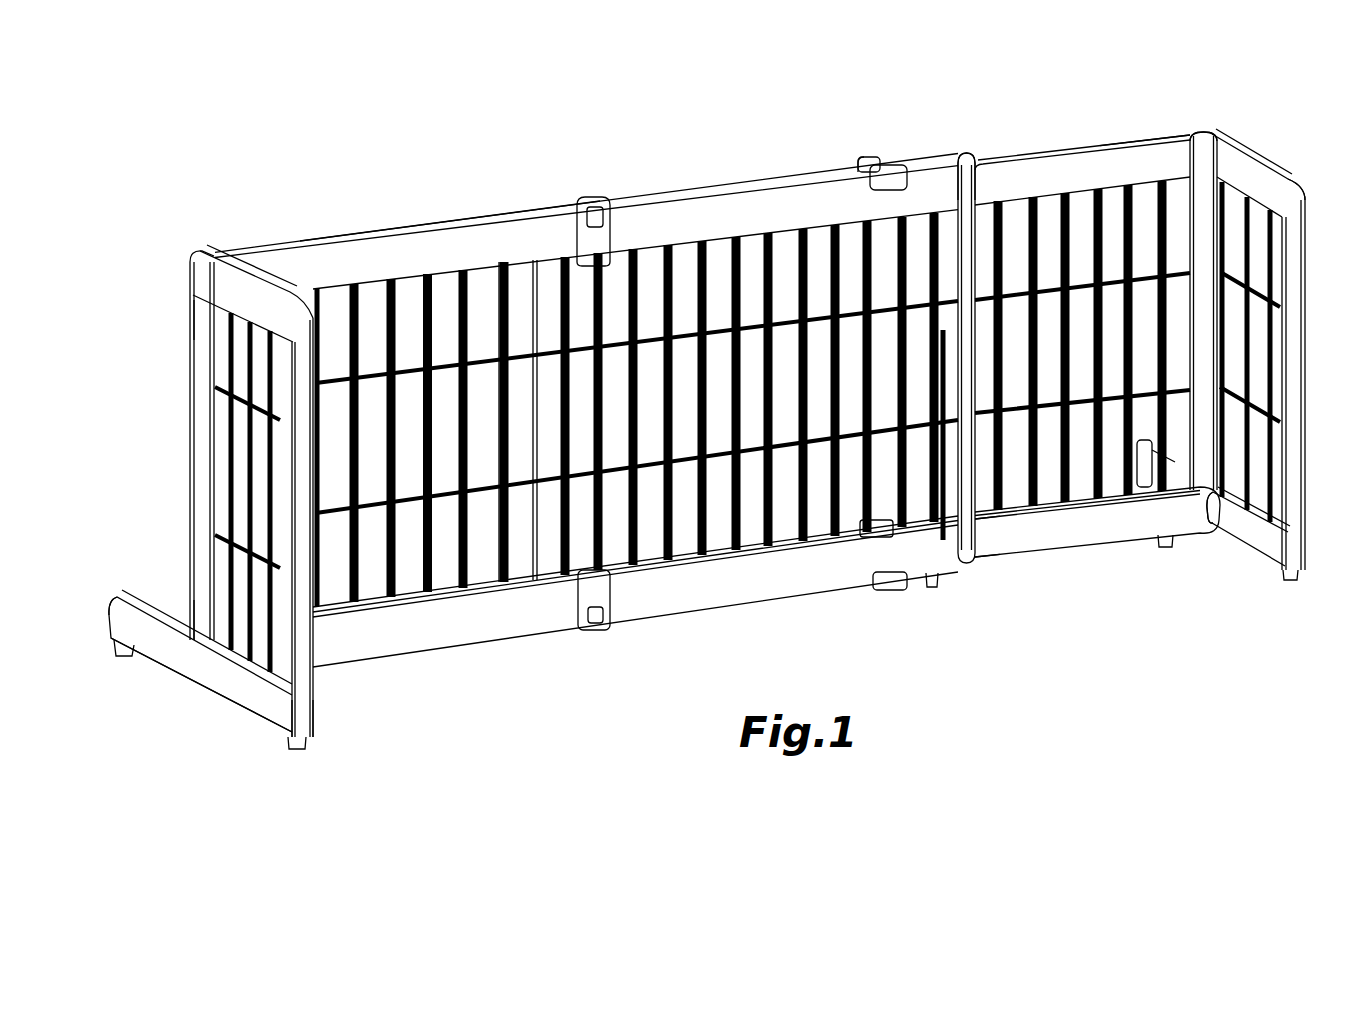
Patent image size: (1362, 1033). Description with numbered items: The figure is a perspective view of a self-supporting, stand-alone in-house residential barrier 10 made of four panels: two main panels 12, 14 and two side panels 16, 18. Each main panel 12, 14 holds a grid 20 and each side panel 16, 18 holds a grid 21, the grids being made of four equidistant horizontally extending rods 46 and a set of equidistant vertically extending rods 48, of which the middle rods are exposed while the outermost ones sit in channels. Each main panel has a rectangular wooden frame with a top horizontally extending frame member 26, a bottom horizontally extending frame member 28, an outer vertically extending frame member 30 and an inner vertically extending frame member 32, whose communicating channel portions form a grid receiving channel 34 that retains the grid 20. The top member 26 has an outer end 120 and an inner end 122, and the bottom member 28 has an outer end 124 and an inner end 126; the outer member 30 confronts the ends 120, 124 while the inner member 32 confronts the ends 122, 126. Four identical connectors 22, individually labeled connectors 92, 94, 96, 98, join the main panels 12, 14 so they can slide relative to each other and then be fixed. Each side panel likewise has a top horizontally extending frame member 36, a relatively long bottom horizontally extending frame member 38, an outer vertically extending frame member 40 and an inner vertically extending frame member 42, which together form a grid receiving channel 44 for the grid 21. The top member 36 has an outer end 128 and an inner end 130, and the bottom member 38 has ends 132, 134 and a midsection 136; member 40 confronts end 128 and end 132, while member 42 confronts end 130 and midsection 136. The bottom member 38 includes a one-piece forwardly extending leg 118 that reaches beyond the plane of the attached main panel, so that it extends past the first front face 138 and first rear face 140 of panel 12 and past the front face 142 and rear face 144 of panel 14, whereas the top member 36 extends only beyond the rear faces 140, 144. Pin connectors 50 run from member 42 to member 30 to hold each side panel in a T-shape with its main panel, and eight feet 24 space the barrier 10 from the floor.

The self-supporting barrier 10 is at (605, 157).
The main panel 12 is at (389, 220).
The main panel 14 is at (1020, 135).
The side panel 16 is at (233, 710).
The side panel 18 is at (1266, 575).
The grid 20 is at (1088, 470).
The grid 21 is at (1268, 440).
The connectors 22 is at (875, 158).
The feet 24 is at (295, 750).
The top horizontally extending frame member 26 is at (1095, 141).
The bottom horizontally extending frame member 28 is at (1125, 540).
The outer vertically extending frame member 30 is at (1200, 183).
The inner vertically extending frame member 32 is at (517, 335).
The grid receiving channel 34 is at (450, 593).
The top horizontally extending frame member 36 is at (265, 278).
The bottom horizontally extending frame member 38 is at (176, 680).
The outer vertically extending frame member 40 is at (313, 668).
The inner vertically extending frame member 42 is at (190, 440).
The grid receiving channel 44 is at (262, 680).
The horizontally extending rods 46 is at (378, 513).
The vertically extending rods 48 is at (1027, 480).
The pin connectors 50 is at (198, 320).
The connector 92 is at (893, 590).
The connector 94 is at (860, 160).
The connector 96 is at (597, 631).
The connector 98 is at (584, 197).
The leg 118 is at (143, 662).
The outer end 120 is at (1217, 150).
The inner end 122 is at (977, 187).
The outer end 124 is at (1215, 507).
The inner end 126 is at (987, 547).
The outer end 128 is at (1305, 202).
The inner end 130 is at (197, 260).
The end 132 is at (313, 712).
The end 134 is at (110, 612).
The midsection 136 is at (202, 700).
The first front face 138 is at (358, 232).
The first rear face 140 is at (455, 240).
The front face 142 is at (1143, 135).
The rear face 144 is at (1060, 167).